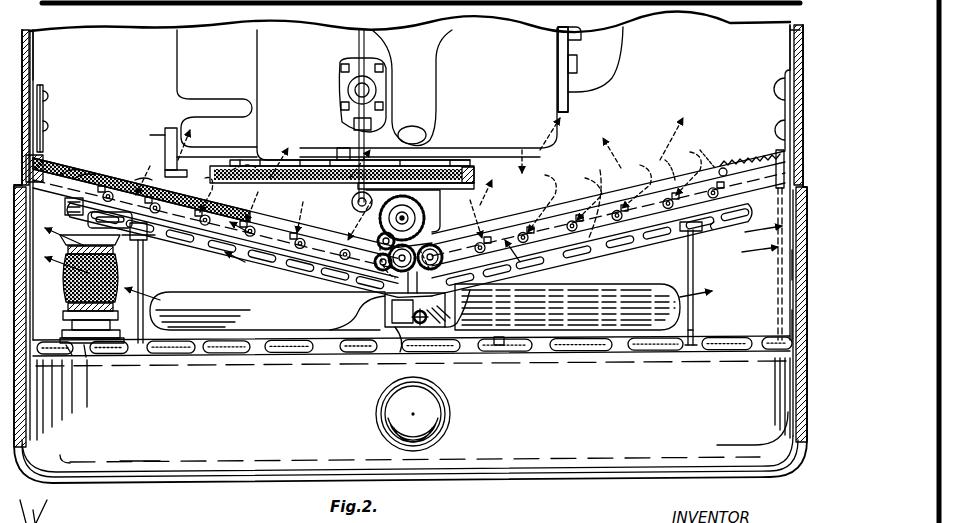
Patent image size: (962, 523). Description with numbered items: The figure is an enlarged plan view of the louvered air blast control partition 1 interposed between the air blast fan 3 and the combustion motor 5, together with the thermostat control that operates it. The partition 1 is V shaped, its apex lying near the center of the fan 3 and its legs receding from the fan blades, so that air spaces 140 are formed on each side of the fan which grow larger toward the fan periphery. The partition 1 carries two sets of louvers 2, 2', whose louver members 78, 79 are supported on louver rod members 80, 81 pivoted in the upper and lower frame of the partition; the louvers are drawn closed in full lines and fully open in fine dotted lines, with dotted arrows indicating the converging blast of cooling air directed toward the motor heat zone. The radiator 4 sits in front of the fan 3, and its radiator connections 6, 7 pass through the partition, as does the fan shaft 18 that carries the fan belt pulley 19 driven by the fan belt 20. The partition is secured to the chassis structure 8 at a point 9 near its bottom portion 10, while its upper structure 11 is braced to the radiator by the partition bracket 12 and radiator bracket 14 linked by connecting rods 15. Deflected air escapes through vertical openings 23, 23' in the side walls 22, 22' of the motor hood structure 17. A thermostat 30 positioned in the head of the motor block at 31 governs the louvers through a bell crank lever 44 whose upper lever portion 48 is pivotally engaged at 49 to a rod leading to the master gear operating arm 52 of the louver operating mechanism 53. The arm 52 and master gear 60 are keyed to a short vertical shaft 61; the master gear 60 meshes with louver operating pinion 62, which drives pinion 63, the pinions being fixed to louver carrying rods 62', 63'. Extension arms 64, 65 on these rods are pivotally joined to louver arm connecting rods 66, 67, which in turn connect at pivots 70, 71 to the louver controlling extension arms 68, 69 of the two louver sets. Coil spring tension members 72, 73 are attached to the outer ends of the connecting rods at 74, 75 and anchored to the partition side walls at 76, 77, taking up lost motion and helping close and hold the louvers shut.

The partition 1 is at (192, 238).
The set of louvers 2 is at (232, 233).
The set of louvers 2' is at (418, 184).
The air blast fan 3 is at (326, 346).
The radiator 4 is at (162, 462).
The combustion motor 5 is at (558, 78).
The radiator connection 6 is at (424, 108).
The radiator connection 7 is at (366, 45).
The chassis structure 8 is at (41, 86).
The securing point 9 is at (44, 146).
The bottom portion 10 is at (790, 47).
The upper structure 11 is at (713, 232).
The partition bracket 12 is at (682, 262).
The radiator bracket 14 is at (700, 343).
The connecting rods 15 is at (185, 280).
The motor hood structure 17 is at (35, 57).
The fan shaft 18 is at (451, 403).
The fan belt pulley 19 is at (456, 170).
The fan belt 20 is at (420, 172).
The side wall 22 is at (768, 325).
The side wall 22' is at (109, 377).
The vertical opening 23 is at (772, 271).
The vertical opening 23' is at (110, 369).
The thermostat 30 is at (335, 82).
The head of the motor block 31 is at (341, 100).
The bell crank lever 44 is at (370, 92).
The upper lever portion 48 is at (376, 84).
The pivot 49 is at (341, 66).
The master gear operating arm 52 is at (262, 232).
The louver operating mechanism 53 is at (337, 154).
The master gear 60 is at (472, 176).
The short vertical shaft 61 is at (460, 202).
The louver operating pinion 62 is at (389, 311).
The louver carrying rod 62' is at (391, 340).
The louver operating pinion 63 is at (465, 343).
The louver carrying rod 63' is at (509, 367).
The extension arm 64 is at (348, 297).
The extension arm 65 is at (545, 290).
The louver arm connecting rod 66 is at (198, 220).
The louver arm connecting rod 67 is at (604, 222).
The louver controlling extension arm 68 is at (140, 178).
The louver controlling extension arm 69 is at (590, 235).
The pivotal connection 70 is at (166, 178).
The pivotal connection 71 is at (675, 178).
The coil spring tension member 72 is at (78, 176).
The coil spring tension member 73 is at (754, 168).
The spring connection 74 is at (120, 178).
The spring connection 75 is at (722, 168).
The spring anchorage 76 is at (66, 172).
The spring anchorage 77 is at (778, 156).
The louver members 78 is at (200, 233).
The louver members 79 is at (618, 222).
The louver rod member 80 is at (246, 240).
The louver rod member 81 is at (746, 200).
The air spaces 140 is at (226, 346).